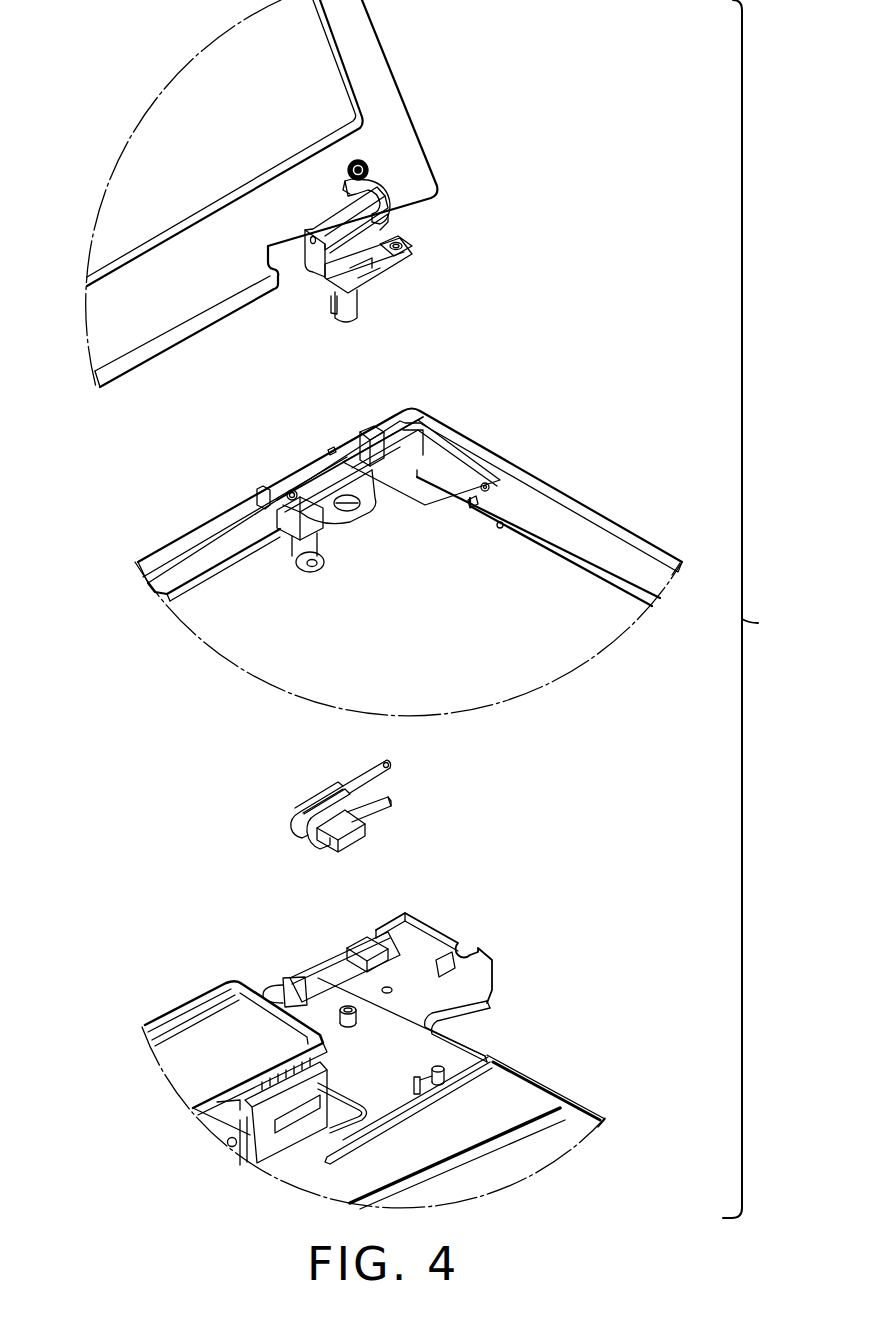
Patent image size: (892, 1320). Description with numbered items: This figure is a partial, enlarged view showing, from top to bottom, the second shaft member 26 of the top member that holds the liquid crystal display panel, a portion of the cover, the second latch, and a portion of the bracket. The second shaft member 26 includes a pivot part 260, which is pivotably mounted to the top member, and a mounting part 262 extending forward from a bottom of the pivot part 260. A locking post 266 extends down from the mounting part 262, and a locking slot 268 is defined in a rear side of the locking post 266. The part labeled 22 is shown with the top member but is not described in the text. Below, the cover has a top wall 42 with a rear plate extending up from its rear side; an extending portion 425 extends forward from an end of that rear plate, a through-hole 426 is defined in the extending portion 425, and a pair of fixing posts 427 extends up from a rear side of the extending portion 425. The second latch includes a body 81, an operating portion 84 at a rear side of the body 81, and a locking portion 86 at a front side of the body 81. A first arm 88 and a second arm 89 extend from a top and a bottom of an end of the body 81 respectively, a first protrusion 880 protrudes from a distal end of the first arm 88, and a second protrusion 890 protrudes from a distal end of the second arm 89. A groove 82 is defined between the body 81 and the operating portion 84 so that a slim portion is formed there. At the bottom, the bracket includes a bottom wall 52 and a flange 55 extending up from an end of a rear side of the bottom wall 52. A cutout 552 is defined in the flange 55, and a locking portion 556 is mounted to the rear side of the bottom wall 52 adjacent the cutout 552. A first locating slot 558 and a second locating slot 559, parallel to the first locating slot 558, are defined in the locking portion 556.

The front frame 22 is at (385, 132).
The second shaft member 26 is at (392, 251).
The pivot part 260 is at (373, 190).
The mounting part 262 is at (347, 275).
The locking post 266 is at (353, 305).
The locking slot 268 is at (333, 305).
The top wall 42 is at (408, 549).
The extending portion 425 is at (377, 490).
The through-hole 426 is at (350, 503).
The fixing posts 427 is at (347, 455).
The body 81 is at (350, 804).
The groove 82 is at (303, 833).
The operating portion 84 is at (312, 802).
The locking portion 86 is at (352, 838).
The first arm 88 is at (415, 761).
The first protrusion 880 is at (388, 763).
The second arm 89 is at (409, 823).
The second protrusion 890 is at (393, 812).
The bottom wall 52 is at (397, 1043).
The flange 55 is at (317, 980).
The cutout 552 is at (328, 962).
The locking portion 556 is at (483, 1010).
The first locating slot 558 is at (388, 933).
The second locating slot 559 is at (432, 925).